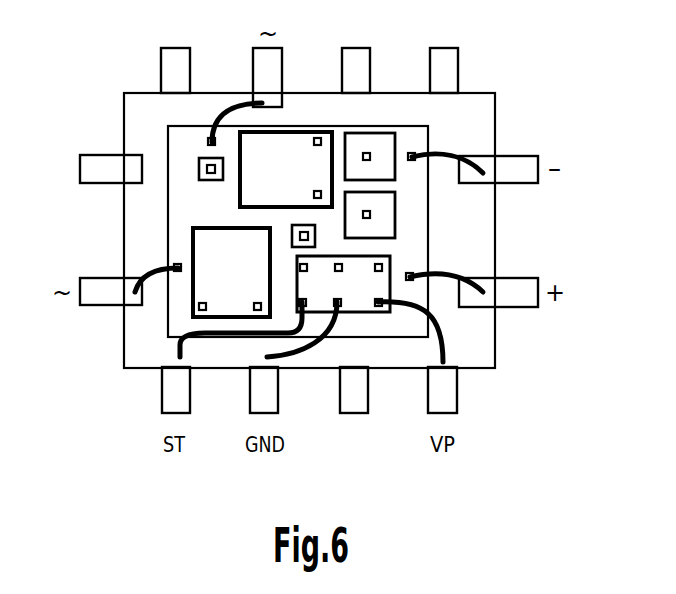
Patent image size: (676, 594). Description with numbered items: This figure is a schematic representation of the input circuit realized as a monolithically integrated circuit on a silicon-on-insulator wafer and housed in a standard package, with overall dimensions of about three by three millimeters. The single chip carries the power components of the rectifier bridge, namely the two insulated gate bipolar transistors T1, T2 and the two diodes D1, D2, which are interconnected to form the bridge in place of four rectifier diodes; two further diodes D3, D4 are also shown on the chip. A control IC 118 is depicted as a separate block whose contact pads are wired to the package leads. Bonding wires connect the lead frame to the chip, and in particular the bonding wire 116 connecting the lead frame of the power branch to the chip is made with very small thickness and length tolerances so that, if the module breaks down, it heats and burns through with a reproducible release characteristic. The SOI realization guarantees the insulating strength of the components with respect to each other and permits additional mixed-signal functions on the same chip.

The bonding wire 116 is at (483, 120).
The low-voltage control IC 118 is at (380, 312).
The insulated gate bipolar transistor T1 is at (302, 138).
The insulated gate bipolar transistor T2 is at (202, 295).
The diode D1 is at (382, 135).
The diode D2 is at (392, 215).
The third diode D3 is at (199, 163).
The fourth diode D4 is at (292, 227).